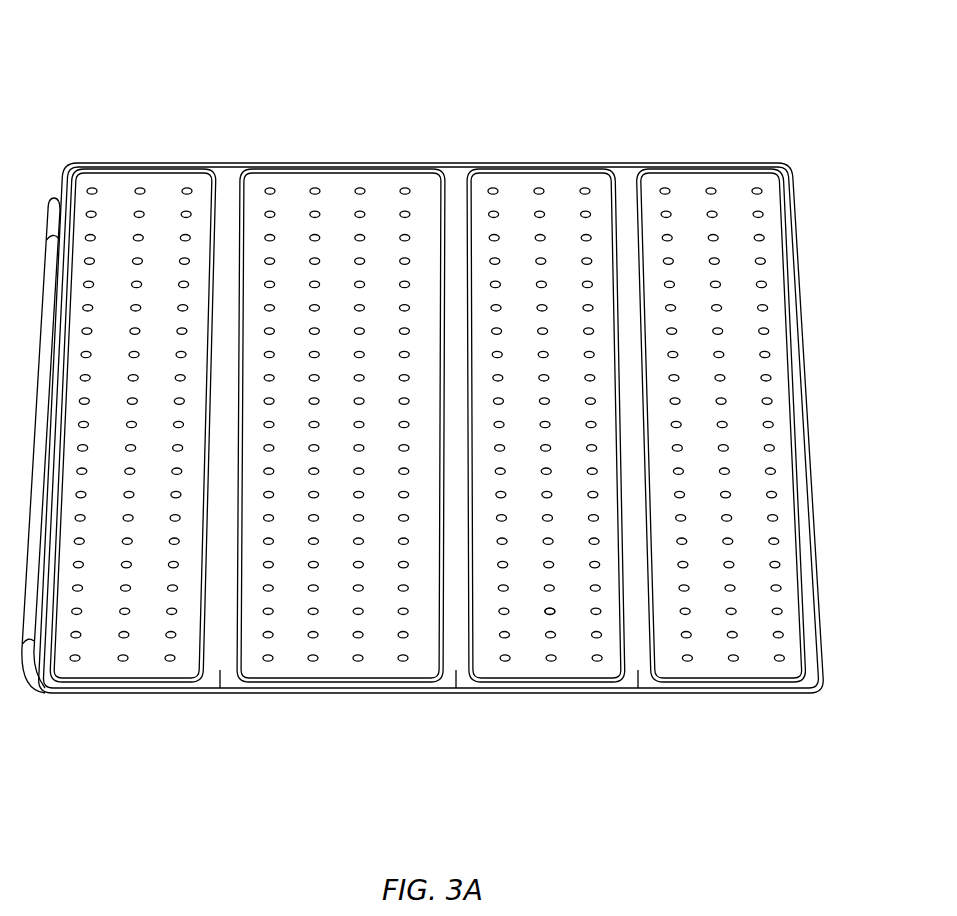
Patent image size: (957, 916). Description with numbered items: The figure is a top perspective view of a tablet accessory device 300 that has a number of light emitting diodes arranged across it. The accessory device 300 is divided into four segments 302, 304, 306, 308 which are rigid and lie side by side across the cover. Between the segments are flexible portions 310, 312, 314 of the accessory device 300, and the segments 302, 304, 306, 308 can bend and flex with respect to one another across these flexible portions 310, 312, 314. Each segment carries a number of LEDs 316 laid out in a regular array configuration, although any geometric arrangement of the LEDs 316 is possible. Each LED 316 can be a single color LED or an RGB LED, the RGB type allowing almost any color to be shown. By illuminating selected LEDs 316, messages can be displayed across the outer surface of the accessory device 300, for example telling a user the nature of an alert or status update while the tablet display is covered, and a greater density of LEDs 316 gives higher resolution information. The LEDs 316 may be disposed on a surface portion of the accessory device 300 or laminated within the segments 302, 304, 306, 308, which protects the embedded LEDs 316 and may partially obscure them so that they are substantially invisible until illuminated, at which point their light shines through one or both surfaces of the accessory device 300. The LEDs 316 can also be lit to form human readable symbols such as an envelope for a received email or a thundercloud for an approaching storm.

The tablet accessory device 300 is at (94, 79).
The segment 302 is at (176, 142).
The segment 304 is at (354, 145).
The segment 306 is at (506, 145).
The segment 308 is at (676, 145).
The flexible portion 310 is at (213, 679).
The flexible portion 312 is at (453, 676).
The flexible portion 314 is at (636, 688).
The light emitting diode 316 is at (545, 630).